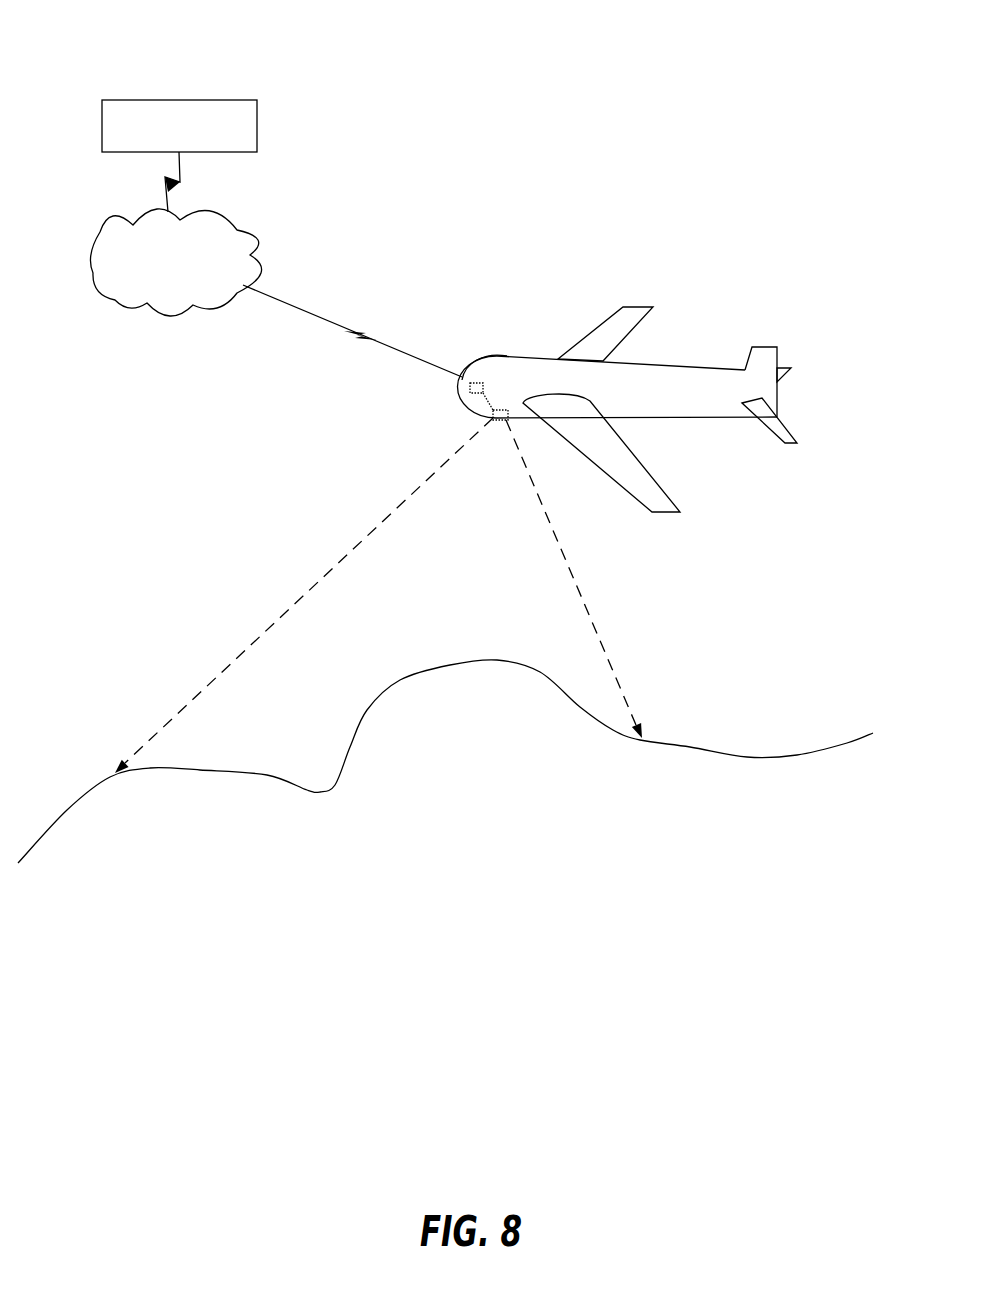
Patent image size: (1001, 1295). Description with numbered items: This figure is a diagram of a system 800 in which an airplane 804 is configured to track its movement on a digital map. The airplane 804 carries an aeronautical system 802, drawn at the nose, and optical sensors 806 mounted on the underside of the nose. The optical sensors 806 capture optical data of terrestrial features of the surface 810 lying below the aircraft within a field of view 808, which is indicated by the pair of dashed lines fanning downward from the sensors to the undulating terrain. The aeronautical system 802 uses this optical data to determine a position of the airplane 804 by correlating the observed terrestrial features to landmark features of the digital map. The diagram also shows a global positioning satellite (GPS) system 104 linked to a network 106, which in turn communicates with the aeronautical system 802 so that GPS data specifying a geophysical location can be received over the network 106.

The system 800 is at (82, 32).
The global positioning satellite (GPS) system 104 is at (101, 125).
The network 106 is at (105, 233).
The aeronautical system 802 is at (470, 390).
The airplane 804 is at (521, 355).
The optical sensors 806 is at (502, 412).
The field of view 808 is at (257, 596).
The surface 810 is at (687, 747).